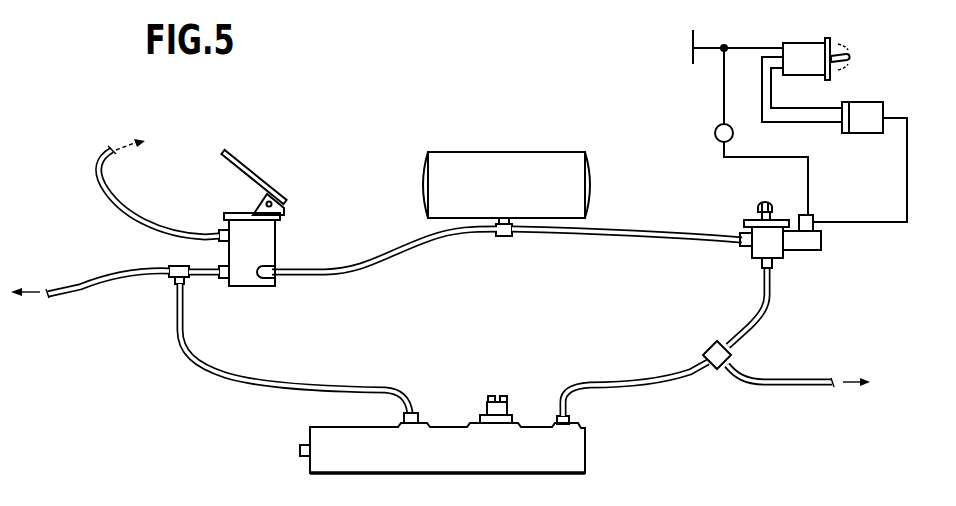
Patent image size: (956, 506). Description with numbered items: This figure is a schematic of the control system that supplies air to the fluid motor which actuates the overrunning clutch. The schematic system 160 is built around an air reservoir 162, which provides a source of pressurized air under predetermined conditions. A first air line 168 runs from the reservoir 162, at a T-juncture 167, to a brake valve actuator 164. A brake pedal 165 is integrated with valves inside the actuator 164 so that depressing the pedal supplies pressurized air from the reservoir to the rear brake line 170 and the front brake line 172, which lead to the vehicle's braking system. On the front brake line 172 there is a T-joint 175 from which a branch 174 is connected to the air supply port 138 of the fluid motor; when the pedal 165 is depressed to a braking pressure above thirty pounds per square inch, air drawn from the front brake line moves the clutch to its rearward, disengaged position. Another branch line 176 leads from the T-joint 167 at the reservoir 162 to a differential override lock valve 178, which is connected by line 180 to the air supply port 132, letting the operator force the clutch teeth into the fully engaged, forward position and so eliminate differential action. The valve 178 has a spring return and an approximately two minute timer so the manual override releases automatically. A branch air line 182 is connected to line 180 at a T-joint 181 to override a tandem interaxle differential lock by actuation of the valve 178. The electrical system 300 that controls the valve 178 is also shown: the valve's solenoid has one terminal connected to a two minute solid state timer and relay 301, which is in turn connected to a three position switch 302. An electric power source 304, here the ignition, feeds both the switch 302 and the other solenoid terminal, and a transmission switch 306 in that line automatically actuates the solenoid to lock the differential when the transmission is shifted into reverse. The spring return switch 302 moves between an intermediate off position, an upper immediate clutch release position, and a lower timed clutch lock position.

The air supply port 132 is at (572, 426).
The air supply port 138 is at (420, 422).
The schematic system 160 is at (569, 147).
The air reservoir 162 is at (518, 189).
The brake valve actuator 164 is at (261, 244).
The brake pedal 165 is at (241, 165).
The T-juncture 167 is at (505, 237).
The first air line 168 is at (402, 251).
The rear brake line 170 is at (94, 189).
The front brake line 172 is at (90, 297).
The branch 174 is at (290, 364).
The T-joint 175 is at (173, 282).
The branch line 176 is at (677, 212).
The differential override lock valve 178 is at (757, 248).
The line 180 is at (648, 368).
The T-joint 181 is at (715, 346).
The branch air line 182 is at (821, 369).
The electrical system 300 is at (704, 89).
The solid state timer and relay 301 is at (865, 108).
The three position switch 302 is at (853, 56).
The electric power source 304 is at (696, 42).
The transmission switch 306 is at (717, 137).